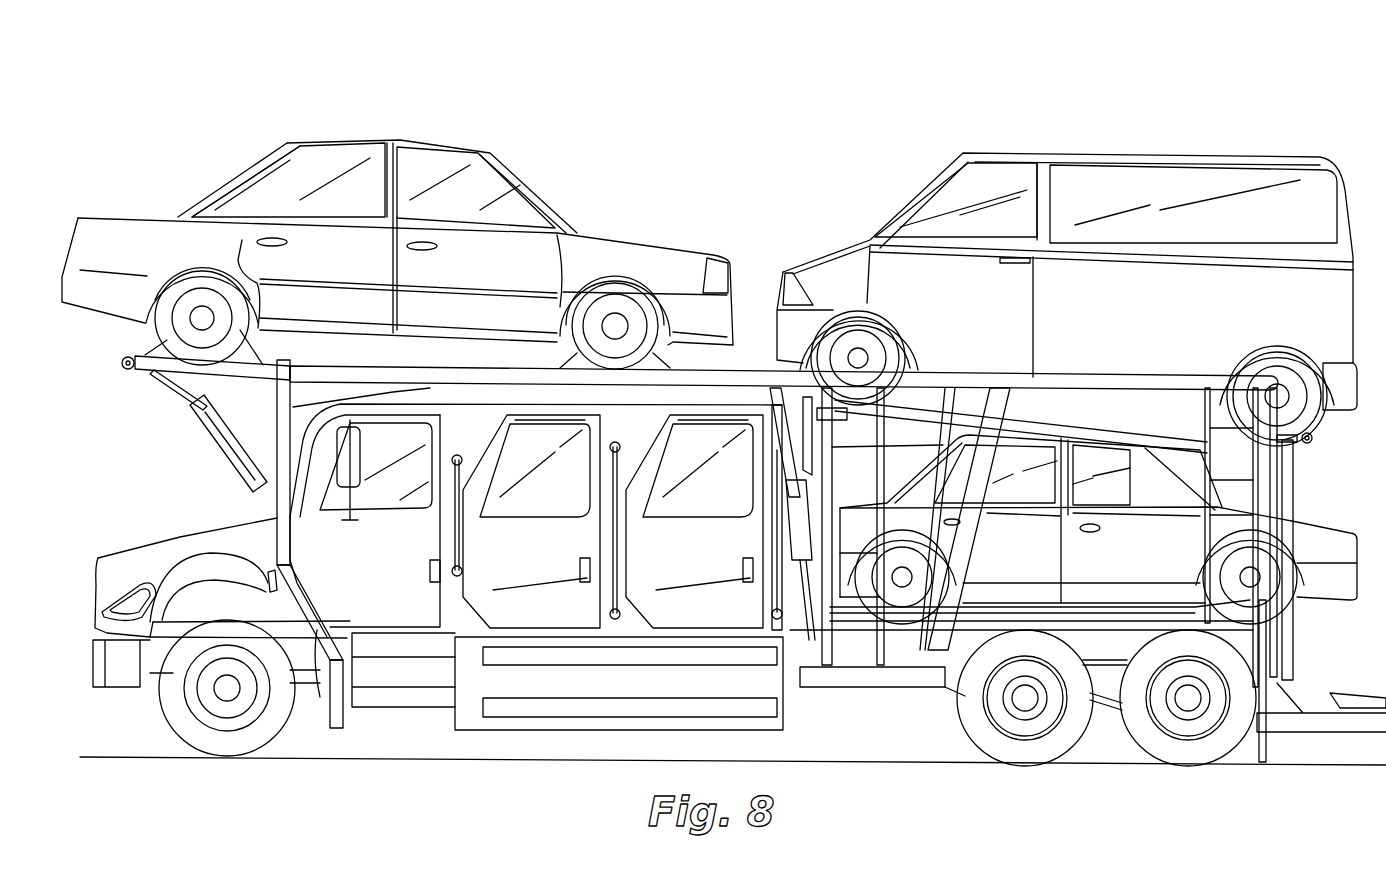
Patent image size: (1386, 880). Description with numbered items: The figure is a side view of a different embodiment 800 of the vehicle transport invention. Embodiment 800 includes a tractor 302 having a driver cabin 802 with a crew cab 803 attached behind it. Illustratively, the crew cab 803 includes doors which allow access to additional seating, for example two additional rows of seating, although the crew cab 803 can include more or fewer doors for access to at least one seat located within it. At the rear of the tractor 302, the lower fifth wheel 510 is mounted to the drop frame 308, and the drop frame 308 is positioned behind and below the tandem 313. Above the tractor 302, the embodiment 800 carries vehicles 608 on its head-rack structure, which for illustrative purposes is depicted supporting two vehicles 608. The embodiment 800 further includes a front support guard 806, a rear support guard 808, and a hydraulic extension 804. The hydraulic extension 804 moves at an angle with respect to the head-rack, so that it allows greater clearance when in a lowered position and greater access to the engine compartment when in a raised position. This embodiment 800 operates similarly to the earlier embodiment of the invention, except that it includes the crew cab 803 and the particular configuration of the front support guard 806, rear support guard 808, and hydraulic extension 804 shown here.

The embodiment 800 is at (200, 84).
The vehicles 608 is at (548, 195).
The hydraulic extension 804 is at (160, 395).
The front support guard 806 is at (223, 458).
The tractor 302 is at (106, 538).
The driver cabin 802 is at (203, 538).
The crew cab 803 is at (712, 563).
The rear support guard 808 is at (1263, 472).
The lower fifth wheel 510 is at (1357, 693).
The tandem 313 is at (1040, 747).
The drop frame 308 is at (1323, 723).